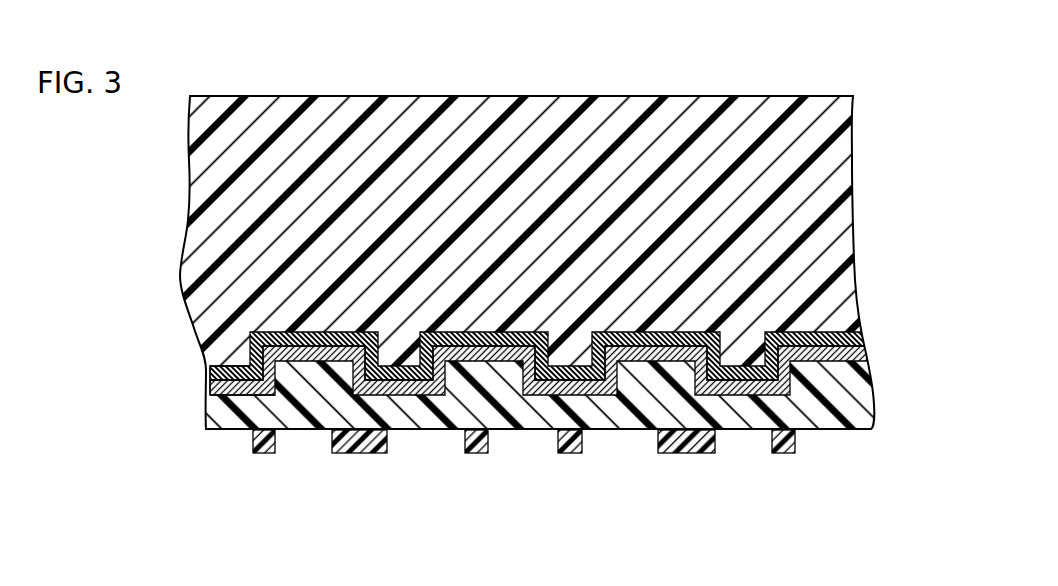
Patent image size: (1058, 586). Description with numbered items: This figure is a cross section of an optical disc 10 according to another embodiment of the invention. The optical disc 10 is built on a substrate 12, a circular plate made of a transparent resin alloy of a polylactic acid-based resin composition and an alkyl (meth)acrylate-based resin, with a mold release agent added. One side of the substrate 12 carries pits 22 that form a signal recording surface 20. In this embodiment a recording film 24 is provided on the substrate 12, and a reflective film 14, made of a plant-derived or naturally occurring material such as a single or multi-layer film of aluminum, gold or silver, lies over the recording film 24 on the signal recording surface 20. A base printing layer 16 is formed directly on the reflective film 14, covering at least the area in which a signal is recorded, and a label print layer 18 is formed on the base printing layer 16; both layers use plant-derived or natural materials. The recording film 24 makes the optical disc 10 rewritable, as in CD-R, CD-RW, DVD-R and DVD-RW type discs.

The optical disc 10 is at (232, 47).
The substrate 12 is at (827, 178).
The reflective film 14 is at (864, 357).
The base printing layer 16 is at (812, 395).
The label print layer 18 is at (677, 456).
The signal recording surface 20 is at (218, 367).
The pits 22 is at (478, 363).
The recording film 24 is at (864, 337).